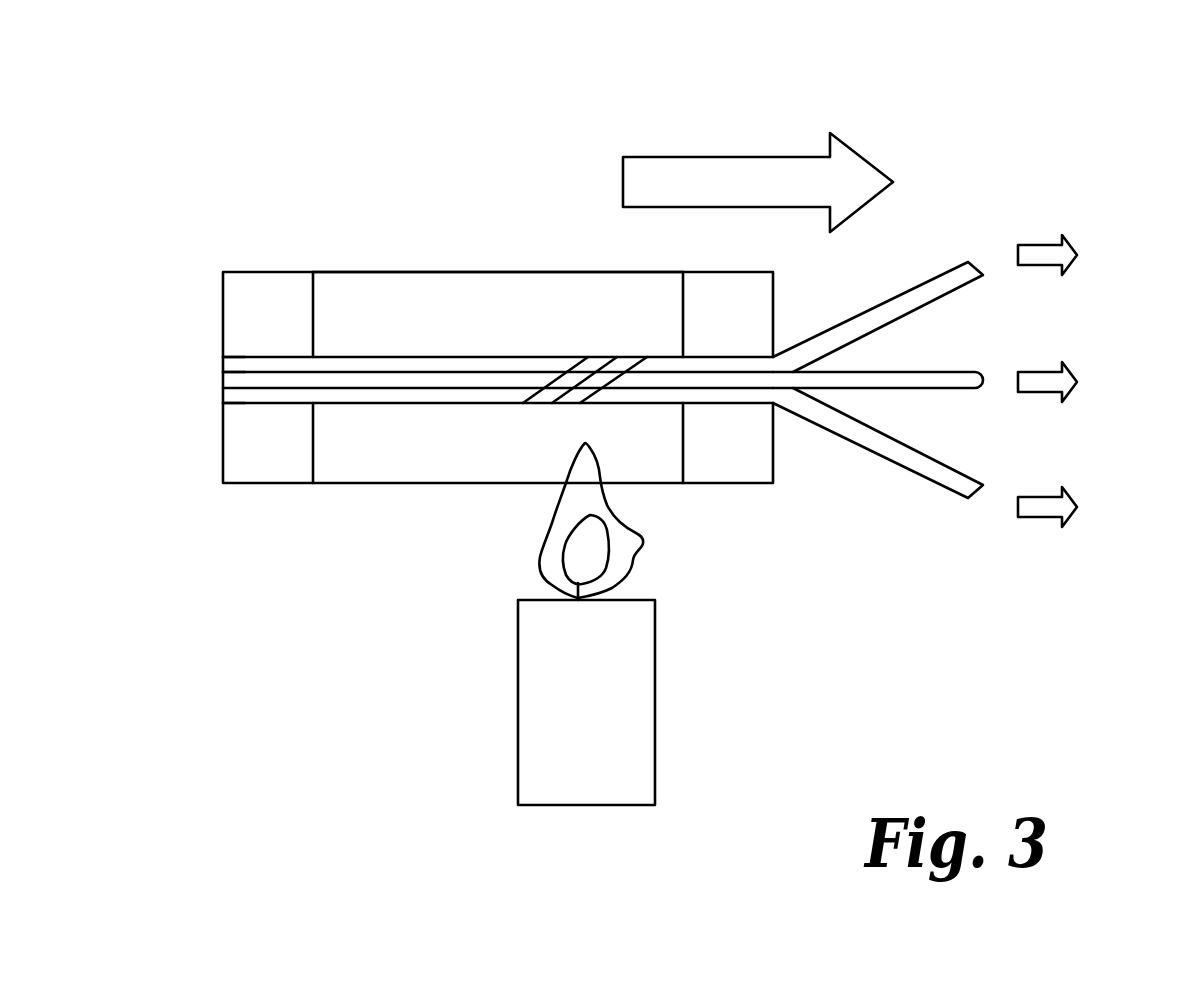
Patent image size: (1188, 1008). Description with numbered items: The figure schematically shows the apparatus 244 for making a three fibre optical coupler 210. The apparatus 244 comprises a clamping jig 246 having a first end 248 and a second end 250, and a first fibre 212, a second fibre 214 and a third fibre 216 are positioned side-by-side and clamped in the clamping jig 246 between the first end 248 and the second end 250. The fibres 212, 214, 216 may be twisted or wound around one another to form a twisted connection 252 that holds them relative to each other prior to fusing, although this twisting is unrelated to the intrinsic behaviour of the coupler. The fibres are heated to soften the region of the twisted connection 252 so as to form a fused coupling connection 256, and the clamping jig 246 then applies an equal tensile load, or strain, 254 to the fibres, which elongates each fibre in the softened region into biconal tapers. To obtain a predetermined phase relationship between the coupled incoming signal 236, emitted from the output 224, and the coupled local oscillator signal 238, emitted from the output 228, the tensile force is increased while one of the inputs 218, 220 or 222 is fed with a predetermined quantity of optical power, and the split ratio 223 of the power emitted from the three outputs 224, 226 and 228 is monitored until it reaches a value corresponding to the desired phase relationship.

The apparatus 244 is at (450, 207).
The first end 248 is at (267, 293).
The clamping jig 246 is at (405, 305).
The second end 250 is at (732, 465).
The first fibre 212 is at (487, 363).
The second fibre 214 is at (342, 378).
The third fibre 216 is at (383, 395).
The optical coupler 210 is at (495, 434).
The input 218 is at (235, 367).
The input 220 is at (227, 382).
The input 222 is at (240, 395).
The twisted connection 252 is at (575, 390).
The fused coupling connection 256 is at (587, 373).
The output 224 is at (952, 275).
The output 226 is at (955, 380).
The output 228 is at (955, 490).
The tensile load 254 is at (767, 202).
The coupled incoming signal 236 is at (1033, 255).
The split ratio 223 is at (1082, 228).
The coupled local oscillator signal 238 is at (1033, 520).